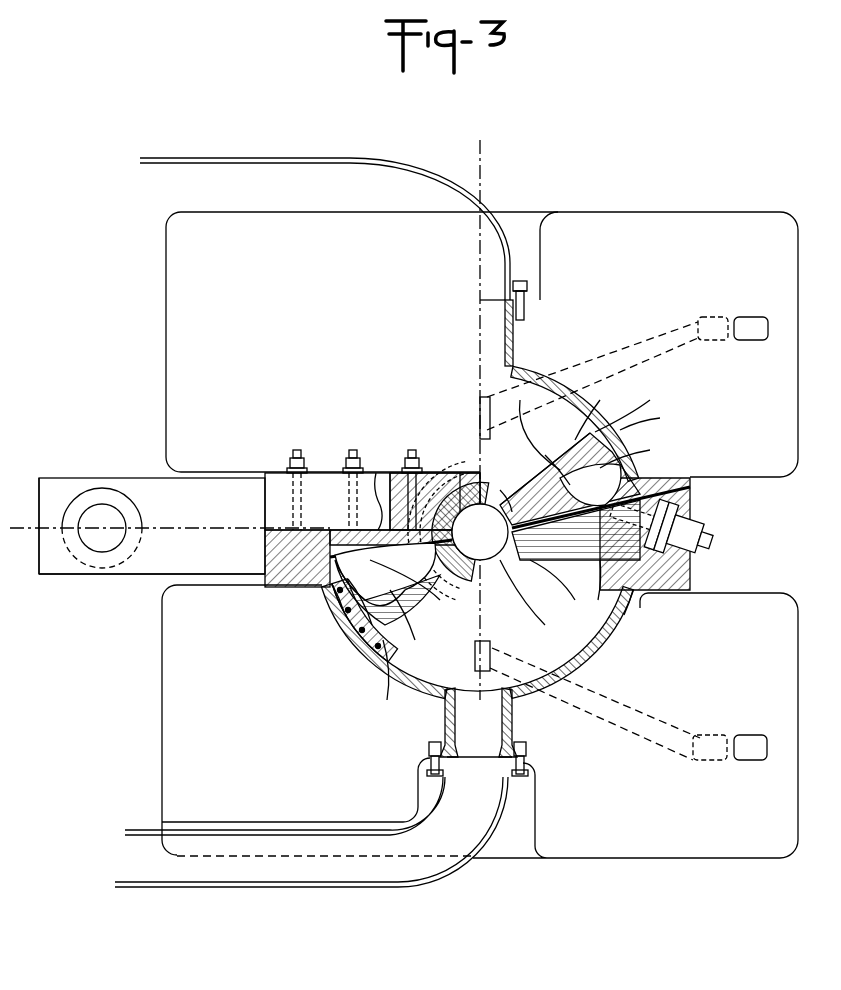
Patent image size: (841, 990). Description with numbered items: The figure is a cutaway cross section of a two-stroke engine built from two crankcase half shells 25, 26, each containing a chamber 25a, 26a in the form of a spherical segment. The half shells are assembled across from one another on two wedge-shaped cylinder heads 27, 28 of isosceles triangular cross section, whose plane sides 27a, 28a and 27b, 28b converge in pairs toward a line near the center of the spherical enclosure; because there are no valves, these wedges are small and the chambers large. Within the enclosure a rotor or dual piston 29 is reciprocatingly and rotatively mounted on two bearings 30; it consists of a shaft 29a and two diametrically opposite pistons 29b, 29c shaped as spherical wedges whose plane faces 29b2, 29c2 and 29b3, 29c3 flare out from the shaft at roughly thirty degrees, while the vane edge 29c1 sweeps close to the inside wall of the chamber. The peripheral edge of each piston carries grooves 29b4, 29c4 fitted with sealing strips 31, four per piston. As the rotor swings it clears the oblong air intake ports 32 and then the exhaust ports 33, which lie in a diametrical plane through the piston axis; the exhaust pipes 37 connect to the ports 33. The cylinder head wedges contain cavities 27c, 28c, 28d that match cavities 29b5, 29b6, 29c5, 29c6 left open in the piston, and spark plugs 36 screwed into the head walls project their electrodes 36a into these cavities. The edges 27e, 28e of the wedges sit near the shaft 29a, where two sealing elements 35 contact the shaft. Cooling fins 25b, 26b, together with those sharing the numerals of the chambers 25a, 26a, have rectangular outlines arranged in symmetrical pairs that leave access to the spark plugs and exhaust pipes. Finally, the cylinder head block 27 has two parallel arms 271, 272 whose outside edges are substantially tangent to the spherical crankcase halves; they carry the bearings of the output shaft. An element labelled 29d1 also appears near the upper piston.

The crankcase half shell 25 is at (524, 372).
The chamber 25a is at (672, 309).
The cooling fin 25b is at (328, 334).
The crankcase half shell 26 is at (605, 673).
The chamber 26a is at (723, 702).
The cooling fin 26b is at (276, 734).
The cylinder head wedge 27 is at (268, 578).
The arm 271 is at (60, 482).
The arm 272 is at (58, 576).
The plane side 27a is at (318, 475).
The plane side 27b is at (433, 537).
The cavity 27c is at (376, 472).
The edge 27e is at (455, 570).
The cylinder head wedge 28 is at (548, 572).
The plane side 28a is at (545, 480).
The plane side 28b is at (578, 578).
The cavity 28c is at (598, 562).
The cavity 28d is at (640, 620).
The edge 28e is at (524, 556).
The rotor or dual piston 29 is at (512, 578).
The shaft 29a is at (500, 572).
The piston 29b is at (513, 425).
The plane face 29b2 is at (585, 412).
The plane face 29b3 is at (507, 500).
The groove 29b4 is at (620, 456).
The cavity 29b5 is at (625, 432).
The cavity 29b6 is at (560, 462).
The piston 29c is at (396, 612).
The edge 29c1 is at (345, 614).
The plane face 29c2 is at (395, 625).
The plane face 29c3 is at (266, 549).
The groove 29c4 is at (358, 650).
The cavity 29c5 is at (383, 680).
The cavity 29c6 is at (392, 585).
The curved member 29d1 is at (652, 404).
The bearing 30 is at (462, 480).
The sealing strip 31 is at (330, 578).
The air intake port 32 is at (480, 414).
The exhaust port 33 is at (480, 341).
The sealing element 35 is at (480, 532).
The spark plug 36 is at (706, 532).
The electrode 36a is at (643, 494).
The exhaust pipe 37 is at (437, 192).